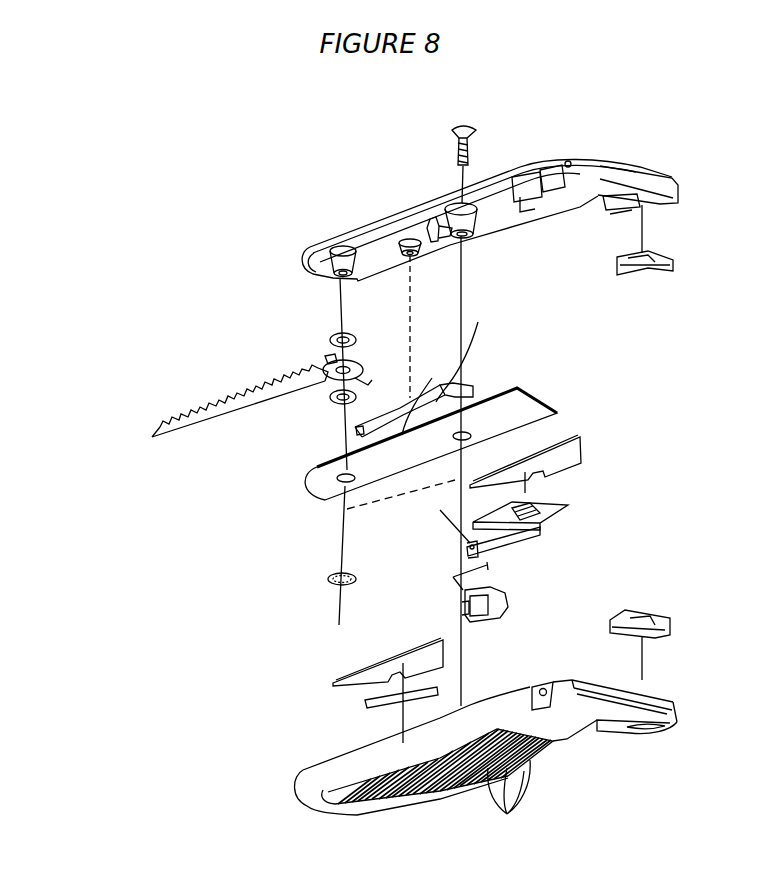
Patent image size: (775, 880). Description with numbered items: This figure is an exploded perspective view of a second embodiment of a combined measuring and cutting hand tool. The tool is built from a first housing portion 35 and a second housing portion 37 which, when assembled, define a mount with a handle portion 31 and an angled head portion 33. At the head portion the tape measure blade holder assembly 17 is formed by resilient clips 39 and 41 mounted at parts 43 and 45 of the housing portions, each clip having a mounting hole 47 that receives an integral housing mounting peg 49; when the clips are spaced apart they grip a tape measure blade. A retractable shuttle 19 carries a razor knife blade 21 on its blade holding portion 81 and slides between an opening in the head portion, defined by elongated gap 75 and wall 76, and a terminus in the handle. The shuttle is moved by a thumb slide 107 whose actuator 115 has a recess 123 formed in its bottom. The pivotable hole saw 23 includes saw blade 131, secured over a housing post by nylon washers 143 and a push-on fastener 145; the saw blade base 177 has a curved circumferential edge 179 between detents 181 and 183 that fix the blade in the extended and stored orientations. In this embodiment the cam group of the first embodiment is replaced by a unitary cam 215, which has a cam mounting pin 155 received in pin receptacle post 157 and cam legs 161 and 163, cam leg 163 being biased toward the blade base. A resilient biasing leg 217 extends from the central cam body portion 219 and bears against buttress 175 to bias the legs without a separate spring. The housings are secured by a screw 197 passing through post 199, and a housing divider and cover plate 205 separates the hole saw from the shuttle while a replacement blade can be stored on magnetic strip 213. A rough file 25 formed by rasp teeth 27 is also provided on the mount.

The tape measure blade holder assembly 17 is at (690, 218).
The retractable shuttle 19 is at (557, 517).
The razor knife blade 21 is at (578, 458).
The pivotable hole saw 23 is at (313, 440).
The rough file 25 is at (437, 800).
The rasp teeth 27 is at (508, 813).
The handle portion 31 is at (312, 252).
The angled head portion 33 is at (662, 174).
The first housing portion 35 is at (373, 223).
The second housing portion 37 is at (583, 740).
The resilient clip 39 is at (673, 263).
The resilient clip 41 is at (648, 613).
The part of housing portion 43 is at (633, 195).
The part of housing portion 45 is at (647, 740).
The mounting hole 47 is at (641, 259).
The housing mounting peg 49 is at (632, 215).
The elongated gap 75 is at (595, 683).
The wall 76 is at (606, 174).
The blade holding portion 81 is at (555, 506).
The thumb slide 107 is at (507, 592).
The actuator 115 is at (493, 620).
The recess 123 is at (462, 608).
The saw blade 131 is at (185, 418).
The nylon washers 143 is at (356, 337).
The push-on fastener 145 is at (327, 583).
The cam mounting pin 155 is at (403, 400).
The pin receptacle post 157 is at (408, 238).
The cam leg 161 is at (476, 388).
The cam leg 163 is at (357, 432).
The buttress 175 is at (434, 217).
The saw blade base 177 is at (330, 376).
The curved circumferential edge 179 is at (366, 366).
The detent 181 is at (413, 364).
The detent 183 is at (331, 357).
The screw 197 is at (470, 127).
The post 199 is at (467, 224).
The housing divider and cover plate 205 is at (548, 410).
The magnetic strip 213 is at (371, 705).
The unitary cam 215 is at (460, 383).
The resilient biasing leg 217 is at (463, 348).
The central cam body portion 219 is at (346, 451).